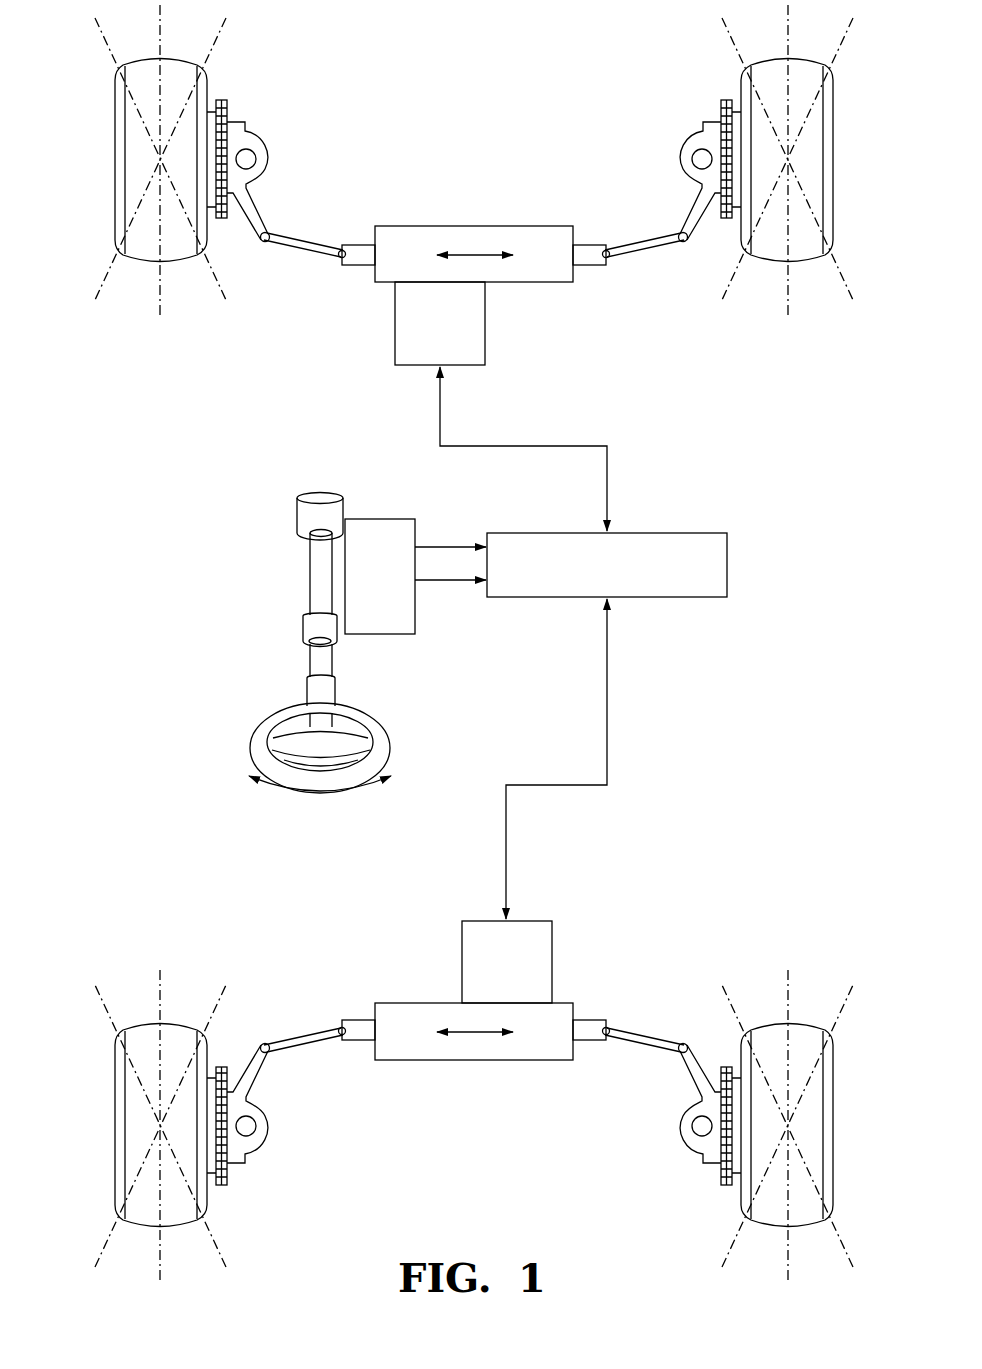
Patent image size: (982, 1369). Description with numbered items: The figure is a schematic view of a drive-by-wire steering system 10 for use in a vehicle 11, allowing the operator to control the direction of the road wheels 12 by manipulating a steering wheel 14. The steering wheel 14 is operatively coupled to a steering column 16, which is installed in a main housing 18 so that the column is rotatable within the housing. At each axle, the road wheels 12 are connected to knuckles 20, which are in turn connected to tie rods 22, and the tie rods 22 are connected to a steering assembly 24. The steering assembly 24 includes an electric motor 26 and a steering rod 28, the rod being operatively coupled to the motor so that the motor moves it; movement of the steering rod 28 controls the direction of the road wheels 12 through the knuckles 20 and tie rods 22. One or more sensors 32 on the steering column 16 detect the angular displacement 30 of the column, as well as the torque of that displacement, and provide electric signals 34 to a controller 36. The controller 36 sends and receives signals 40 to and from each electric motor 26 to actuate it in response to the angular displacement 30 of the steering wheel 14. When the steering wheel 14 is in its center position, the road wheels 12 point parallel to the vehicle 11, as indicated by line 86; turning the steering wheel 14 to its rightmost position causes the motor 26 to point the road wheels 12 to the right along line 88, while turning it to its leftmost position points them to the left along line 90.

The drive-by-wire steering system 10 is at (153, 575).
The vehicle 11 is at (806, 530).
The road wheels 12 is at (198, 90).
The steering wheel 14 is at (255, 740).
The steering column 16 is at (310, 658).
The main housing 18 is at (310, 693).
The knuckles 20 is at (258, 218).
The tie rods 22 is at (296, 250).
The steering assembly 24 is at (458, 226).
The electric motor 26 is at (395, 330).
The steering rod 28 is at (357, 245).
The angular displacement 30 is at (290, 792).
The sensors 32 is at (300, 508).
The electric signals 34 is at (390, 519).
The controller 36 is at (650, 533).
The signals 40 is at (533, 446).
The line 86 is at (160, 300).
The line 88 is at (222, 287).
The line 90 is at (100, 287).